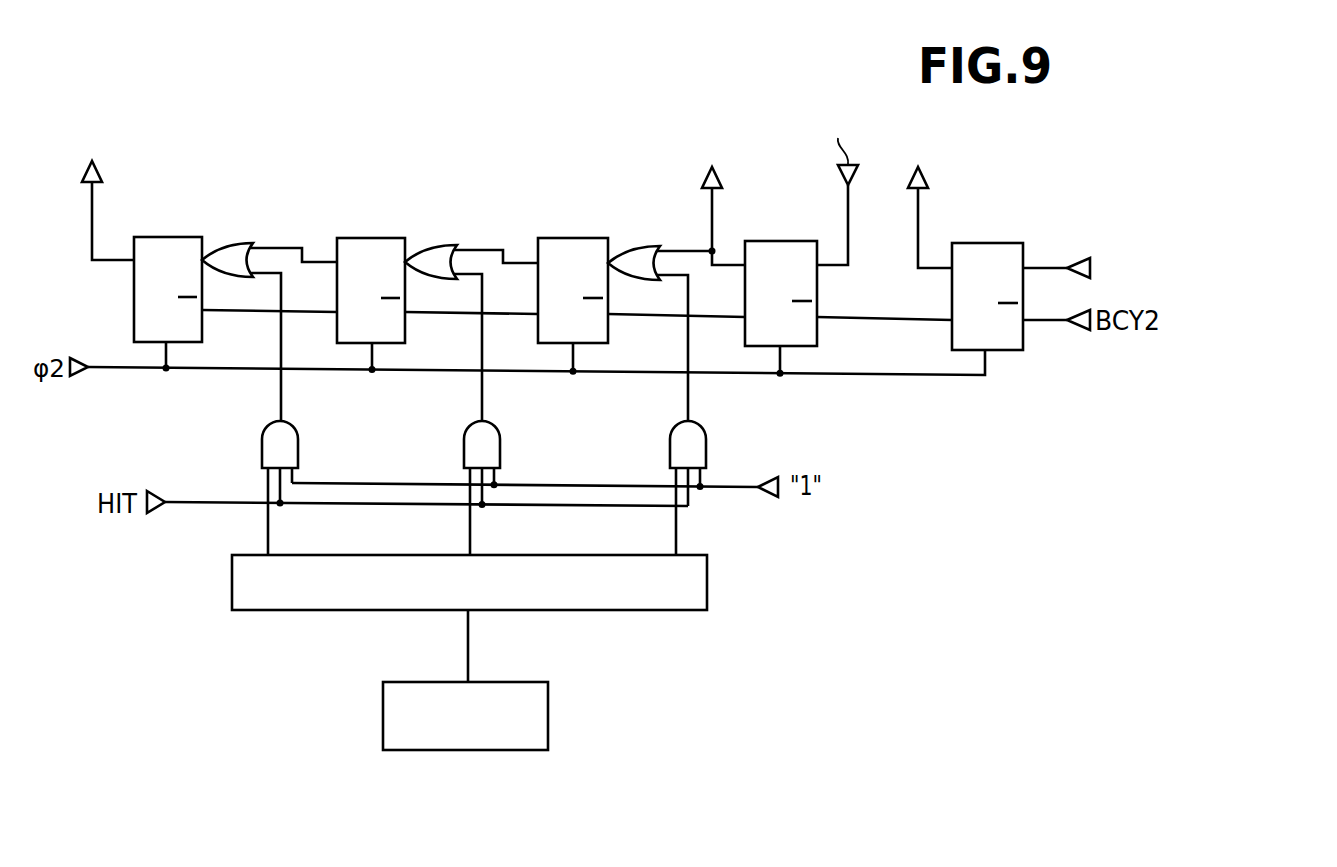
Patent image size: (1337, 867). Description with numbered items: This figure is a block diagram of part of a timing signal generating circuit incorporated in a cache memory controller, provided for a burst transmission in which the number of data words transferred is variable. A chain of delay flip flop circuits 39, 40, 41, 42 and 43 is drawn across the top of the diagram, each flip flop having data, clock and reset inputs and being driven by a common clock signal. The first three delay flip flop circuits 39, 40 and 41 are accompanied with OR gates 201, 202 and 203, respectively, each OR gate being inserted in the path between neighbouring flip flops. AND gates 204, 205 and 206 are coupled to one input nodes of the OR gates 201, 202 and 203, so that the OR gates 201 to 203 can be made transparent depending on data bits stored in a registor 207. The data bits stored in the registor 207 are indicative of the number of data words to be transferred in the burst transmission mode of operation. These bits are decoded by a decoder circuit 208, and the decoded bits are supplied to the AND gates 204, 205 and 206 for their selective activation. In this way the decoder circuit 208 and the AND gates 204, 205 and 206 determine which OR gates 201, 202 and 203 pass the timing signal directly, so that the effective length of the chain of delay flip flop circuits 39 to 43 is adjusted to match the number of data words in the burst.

The delay flip flop circuit 39 is at (171, 237).
The delay flip flop circuit 40 is at (366, 238).
The delay flip flop circuit 41 is at (566, 238).
The delay flip flop circuit 42 is at (778, 241).
The delay flip flop circuit 43 is at (985, 243).
The OR gate 201 is at (236, 245).
The OR gate 202 is at (442, 246).
The OR gate 203 is at (641, 244).
The AND gate 204 is at (298, 437).
The AND gate 205 is at (500, 438).
The AND gate 206 is at (706, 441).
The registor 207 is at (548, 726).
The decoder circuit 208 is at (707, 589).